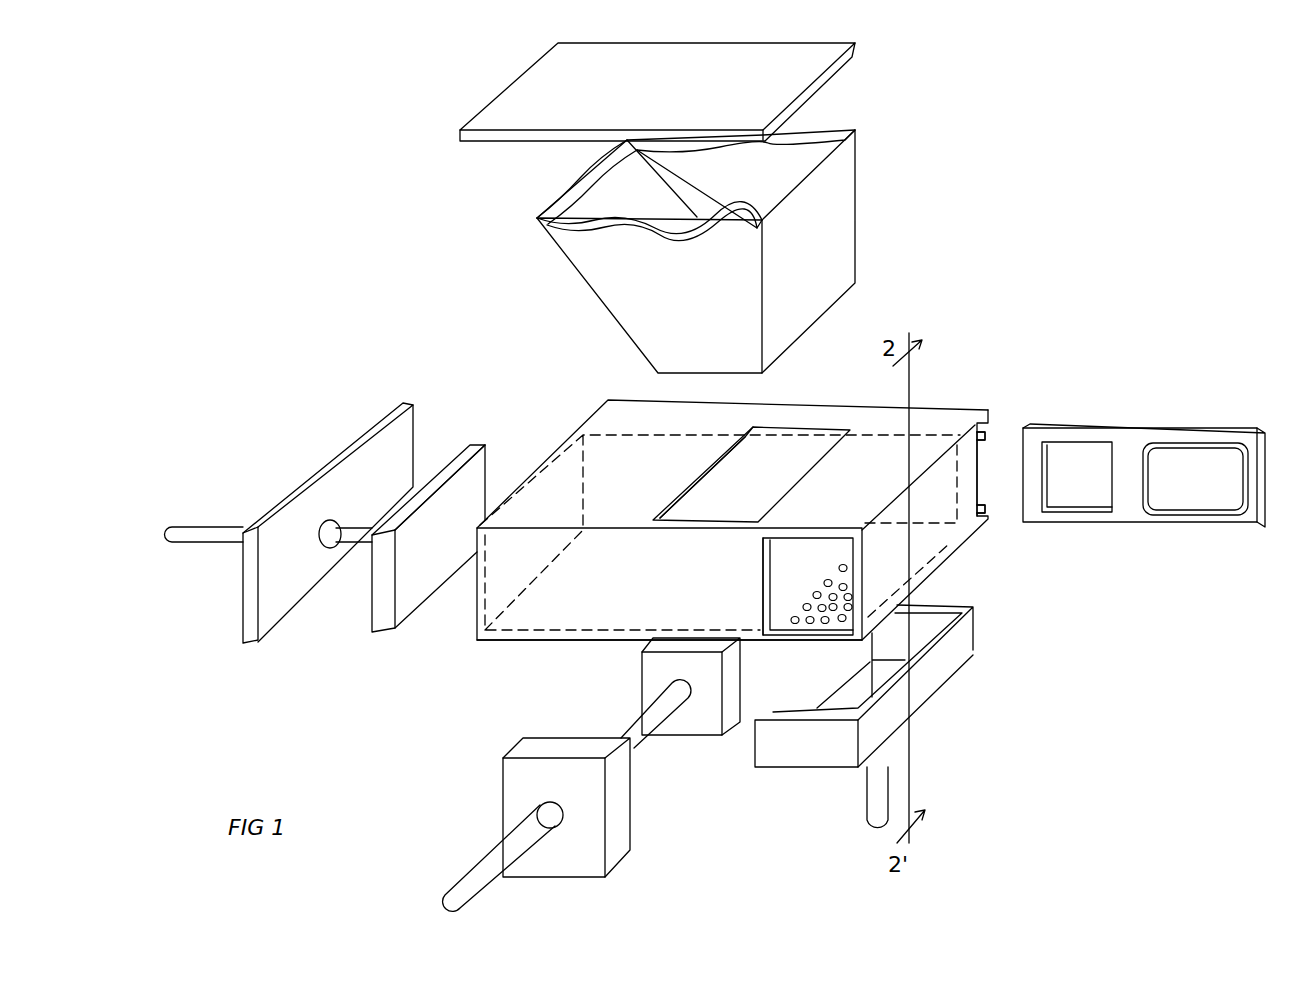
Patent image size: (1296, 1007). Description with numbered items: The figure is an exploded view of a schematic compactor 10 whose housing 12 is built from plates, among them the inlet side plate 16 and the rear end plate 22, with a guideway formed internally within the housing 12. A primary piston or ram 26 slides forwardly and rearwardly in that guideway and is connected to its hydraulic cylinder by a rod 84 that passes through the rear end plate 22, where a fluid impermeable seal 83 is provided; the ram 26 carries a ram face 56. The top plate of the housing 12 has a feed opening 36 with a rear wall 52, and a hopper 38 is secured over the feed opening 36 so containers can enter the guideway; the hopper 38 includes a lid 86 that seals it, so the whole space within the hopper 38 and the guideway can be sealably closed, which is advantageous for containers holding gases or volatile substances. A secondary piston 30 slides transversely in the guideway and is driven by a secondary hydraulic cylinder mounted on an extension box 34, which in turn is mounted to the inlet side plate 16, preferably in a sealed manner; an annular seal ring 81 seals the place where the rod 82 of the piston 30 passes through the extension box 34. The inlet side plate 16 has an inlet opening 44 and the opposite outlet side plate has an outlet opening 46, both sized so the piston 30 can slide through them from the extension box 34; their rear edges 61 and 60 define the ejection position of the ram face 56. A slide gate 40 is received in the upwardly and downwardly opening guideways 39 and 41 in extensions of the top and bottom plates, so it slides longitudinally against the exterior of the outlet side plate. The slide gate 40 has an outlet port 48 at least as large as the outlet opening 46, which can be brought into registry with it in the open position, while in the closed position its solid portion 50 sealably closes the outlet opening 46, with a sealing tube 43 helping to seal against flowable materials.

The compactor 10 is at (1016, 244).
The housing 12 is at (563, 392).
The inlet side plate 16 is at (528, 622).
The rear end plate 22 is at (357, 440).
The primary piston or ram 26 is at (473, 438).
The secondary piston 30 is at (630, 676).
The extension box 34 is at (514, 729).
The feed opening 36 is at (772, 455).
The hopper 38 is at (848, 206).
The upwardly opening guideway 39 is at (985, 435).
The slide gate 40 is at (1160, 422).
The downwardly opening guideway 41 is at (985, 487).
The sealing tube 43 is at (1240, 517).
The inlet opening 44 is at (808, 586).
The outlet opening 46 is at (918, 458).
The outlet port 48 is at (1068, 457).
The solid portion 50 is at (1193, 487).
The rear wall of the feed opening 52 is at (697, 487).
The ram face 56 is at (418, 588).
The rear edge of the outlet opening 60 is at (893, 455).
The rear edge of the inlet opening 61 is at (768, 597).
The annular seal ring 81 is at (560, 826).
The rod 82 is at (643, 735).
The fluid impermeable seal 83 is at (320, 545).
The rod 84 is at (213, 530).
The lid 86 is at (835, 77).